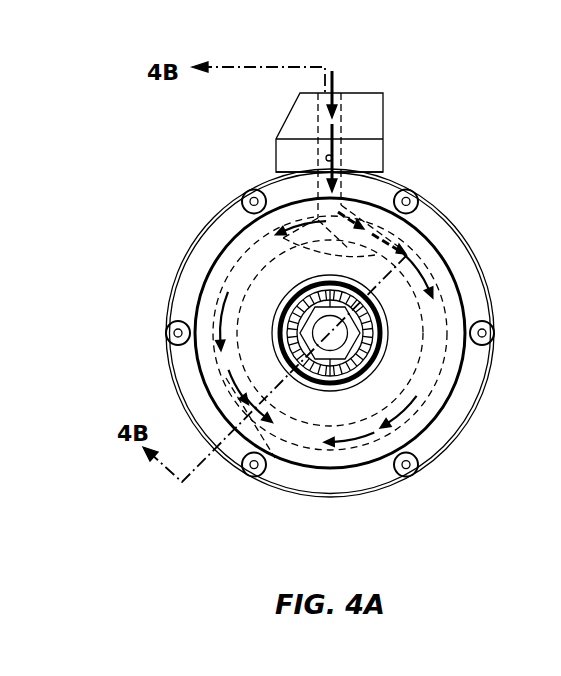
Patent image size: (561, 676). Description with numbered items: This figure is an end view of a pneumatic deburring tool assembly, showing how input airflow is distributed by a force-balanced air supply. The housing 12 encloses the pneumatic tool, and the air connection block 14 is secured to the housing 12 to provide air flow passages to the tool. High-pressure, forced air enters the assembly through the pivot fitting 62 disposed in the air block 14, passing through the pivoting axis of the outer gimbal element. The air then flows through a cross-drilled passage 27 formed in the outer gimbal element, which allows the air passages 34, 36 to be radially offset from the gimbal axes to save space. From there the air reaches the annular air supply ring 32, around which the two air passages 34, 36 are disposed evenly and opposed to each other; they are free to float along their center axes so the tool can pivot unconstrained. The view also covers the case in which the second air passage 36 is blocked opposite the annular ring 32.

The housing 12 is at (457, 222).
The air connection block 14 is at (383, 120).
The cross-drilled passage 27 is at (238, 225).
The annular air supply ring 32 is at (447, 291).
The air passage 34 is at (420, 237).
The air passage 36 is at (275, 458).
The pivot fitting 62 is at (345, 112).